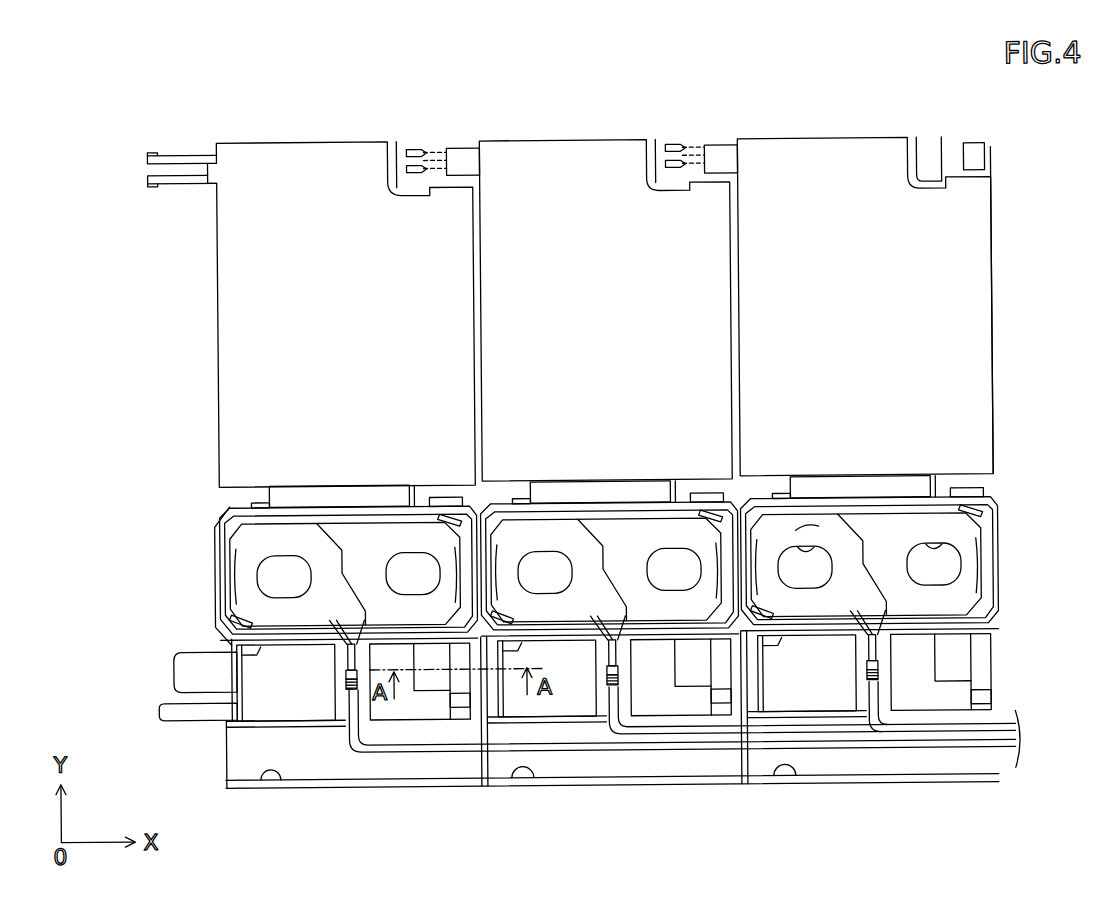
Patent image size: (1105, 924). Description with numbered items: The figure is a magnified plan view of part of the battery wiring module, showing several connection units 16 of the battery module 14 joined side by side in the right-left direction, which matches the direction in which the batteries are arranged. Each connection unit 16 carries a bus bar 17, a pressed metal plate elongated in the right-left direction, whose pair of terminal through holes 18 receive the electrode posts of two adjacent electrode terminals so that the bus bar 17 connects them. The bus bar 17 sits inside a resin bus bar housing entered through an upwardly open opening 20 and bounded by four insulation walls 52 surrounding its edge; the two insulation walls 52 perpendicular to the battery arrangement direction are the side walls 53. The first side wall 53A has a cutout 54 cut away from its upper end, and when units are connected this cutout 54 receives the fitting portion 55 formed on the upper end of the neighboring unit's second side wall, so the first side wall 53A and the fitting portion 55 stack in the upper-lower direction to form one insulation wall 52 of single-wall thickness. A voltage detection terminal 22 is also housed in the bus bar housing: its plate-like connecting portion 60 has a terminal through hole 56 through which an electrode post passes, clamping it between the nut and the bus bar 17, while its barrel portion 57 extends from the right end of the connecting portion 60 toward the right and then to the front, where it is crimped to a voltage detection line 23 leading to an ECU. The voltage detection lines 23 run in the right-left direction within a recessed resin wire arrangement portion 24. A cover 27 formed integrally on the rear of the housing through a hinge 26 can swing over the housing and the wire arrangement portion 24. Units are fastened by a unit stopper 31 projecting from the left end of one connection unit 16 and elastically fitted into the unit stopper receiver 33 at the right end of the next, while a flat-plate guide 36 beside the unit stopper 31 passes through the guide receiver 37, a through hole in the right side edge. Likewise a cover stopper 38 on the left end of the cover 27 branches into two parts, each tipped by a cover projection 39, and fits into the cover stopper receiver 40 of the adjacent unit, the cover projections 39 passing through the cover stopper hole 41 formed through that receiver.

The battery module 14 is at (982, 230).
The connection unit 16 is at (350, 752).
The bus bar 17 is at (867, 529).
The terminal through hole 18 is at (941, 553).
The opening 20 is at (962, 606).
The voltage detection terminal 22 is at (262, 525).
The voltage detection line 23 is at (392, 752).
The wire arrangement portion 24 is at (333, 690).
The hinge 26 is at (325, 487).
The cover 27 is at (289, 140).
The unit stopper 31 is at (178, 667).
The unit stopper receiver 33 is at (979, 667).
The guide 36 is at (185, 708).
The guide receiver 37 is at (990, 708).
The cover stopper 38 is at (185, 150).
The cover projection 39 is at (155, 148).
The cover stopper receiver 40 is at (953, 146).
The cover stopper hole 41 is at (713, 152).
The insulation wall 52 is at (358, 505).
The side wall 53 is at (152, 576).
The first side wall 53A is at (213, 545).
The cutout 54 is at (222, 625).
The fitting portion 55 is at (998, 530).
The terminal through hole 56 is at (803, 554).
The barrel portion 57 is at (346, 660).
The connecting portion 60 is at (252, 540).